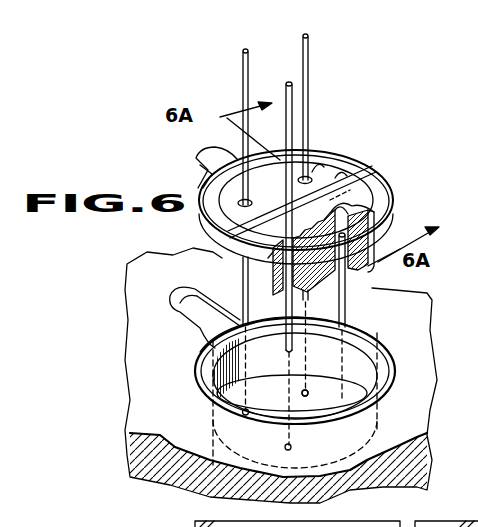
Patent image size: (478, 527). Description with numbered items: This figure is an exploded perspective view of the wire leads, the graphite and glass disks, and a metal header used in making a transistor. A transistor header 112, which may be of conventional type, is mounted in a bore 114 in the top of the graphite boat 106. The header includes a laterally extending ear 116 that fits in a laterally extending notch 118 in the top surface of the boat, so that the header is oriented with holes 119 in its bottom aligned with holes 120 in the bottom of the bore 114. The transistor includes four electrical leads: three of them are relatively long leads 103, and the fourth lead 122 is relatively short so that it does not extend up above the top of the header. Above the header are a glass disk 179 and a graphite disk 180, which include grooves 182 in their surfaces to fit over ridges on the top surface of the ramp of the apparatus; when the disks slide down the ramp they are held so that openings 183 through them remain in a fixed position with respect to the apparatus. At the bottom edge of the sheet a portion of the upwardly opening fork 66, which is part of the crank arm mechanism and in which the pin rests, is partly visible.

The relatively long leads 103 is at (303, 61).
The graphite boat 106 is at (166, 398).
The transistor header 112 is at (372, 182).
The bore 114 is at (372, 376).
The laterally extending ear 116 is at (200, 150).
The laterally extending notch 118 is at (196, 312).
The holes 119 is at (345, 272).
The holes 120 is at (307, 396).
The relatively short lead 122 is at (365, 328).
The glass disk 179 is at (368, 262).
The graphite disk 180 is at (318, 167).
The grooves 182 is at (340, 175).
The openings 183 is at (298, 181).
The upwardly opening fork 66 is at (353, 522).